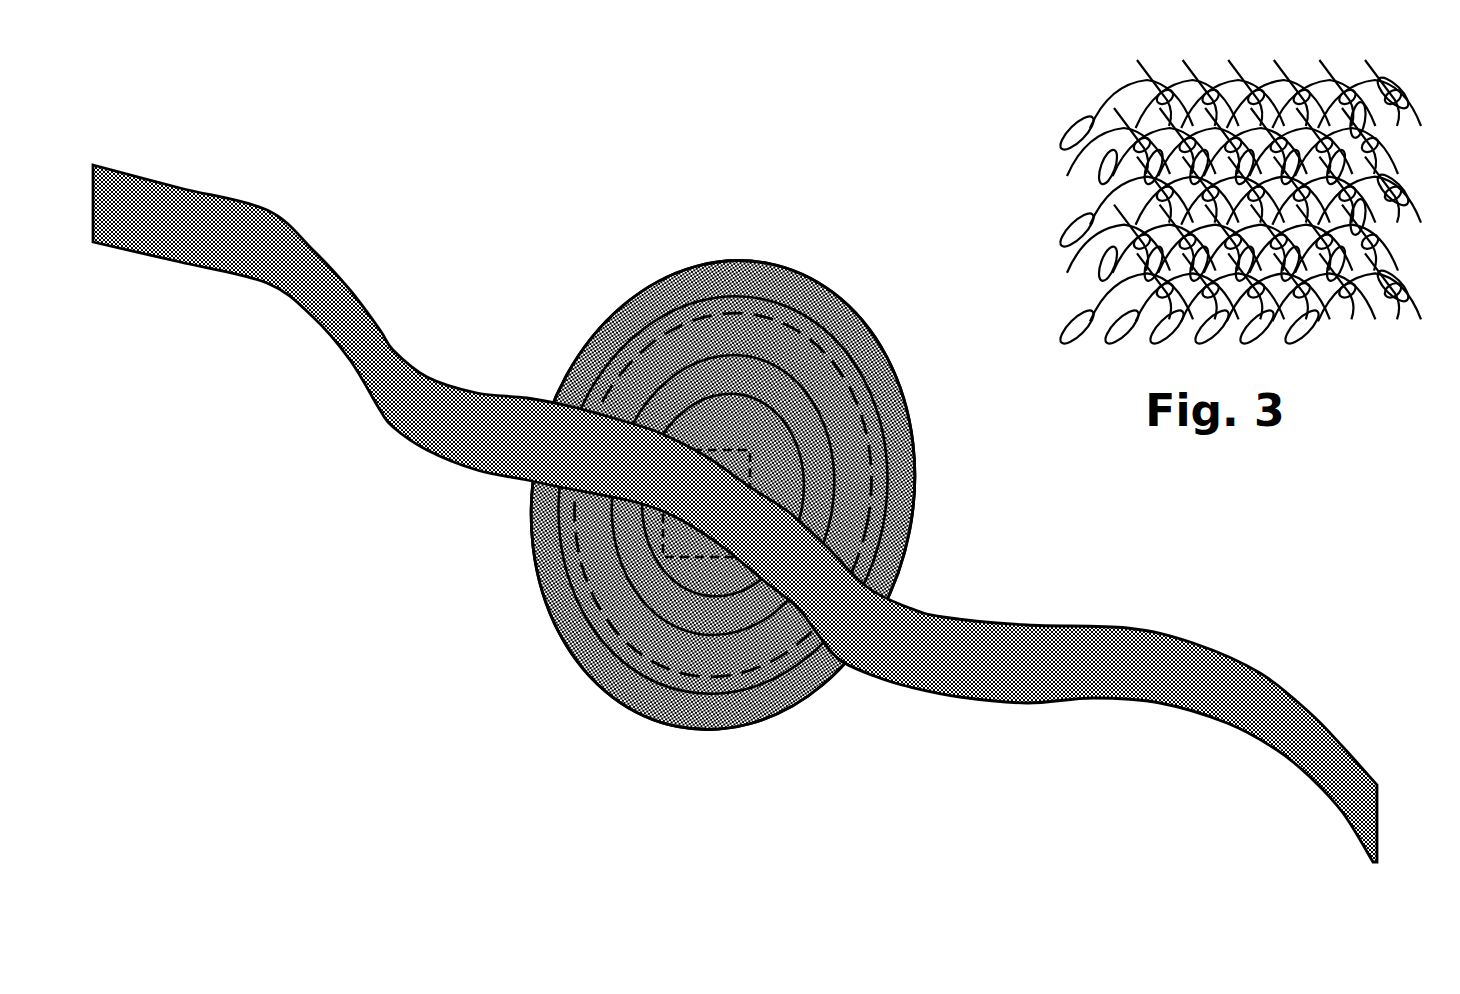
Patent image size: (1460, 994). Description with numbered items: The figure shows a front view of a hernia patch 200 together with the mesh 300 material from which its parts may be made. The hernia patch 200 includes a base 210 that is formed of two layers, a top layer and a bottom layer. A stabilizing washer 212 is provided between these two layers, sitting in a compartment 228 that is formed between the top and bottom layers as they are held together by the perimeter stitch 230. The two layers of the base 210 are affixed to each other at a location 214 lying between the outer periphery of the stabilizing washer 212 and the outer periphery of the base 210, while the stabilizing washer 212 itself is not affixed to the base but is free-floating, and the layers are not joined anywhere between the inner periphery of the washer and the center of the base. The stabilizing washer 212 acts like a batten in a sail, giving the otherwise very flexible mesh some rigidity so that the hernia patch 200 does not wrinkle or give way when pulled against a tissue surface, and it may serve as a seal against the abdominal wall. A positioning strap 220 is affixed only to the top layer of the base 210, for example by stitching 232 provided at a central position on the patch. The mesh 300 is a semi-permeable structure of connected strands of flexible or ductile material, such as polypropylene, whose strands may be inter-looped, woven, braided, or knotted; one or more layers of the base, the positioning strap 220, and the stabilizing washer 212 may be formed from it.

In FIG. 2, the hernia patch 200 is at (352, 760).
In FIG. 2, the base 210 is at (584, 292).
In FIG. 2, the stabilizing washer 212 is at (831, 487).
In FIG. 2, the location 214 is at (741, 320).
In FIG. 2, the positioning strap 220 is at (952, 663).
In FIG. 2, the compartment 228 is at (789, 379).
In FIG. 2, the perimeter stitch 230 is at (556, 556).
In FIG. 2, the stitching 232 is at (690, 533).
In FIG. 3, the mesh 300 is at (1434, 417).